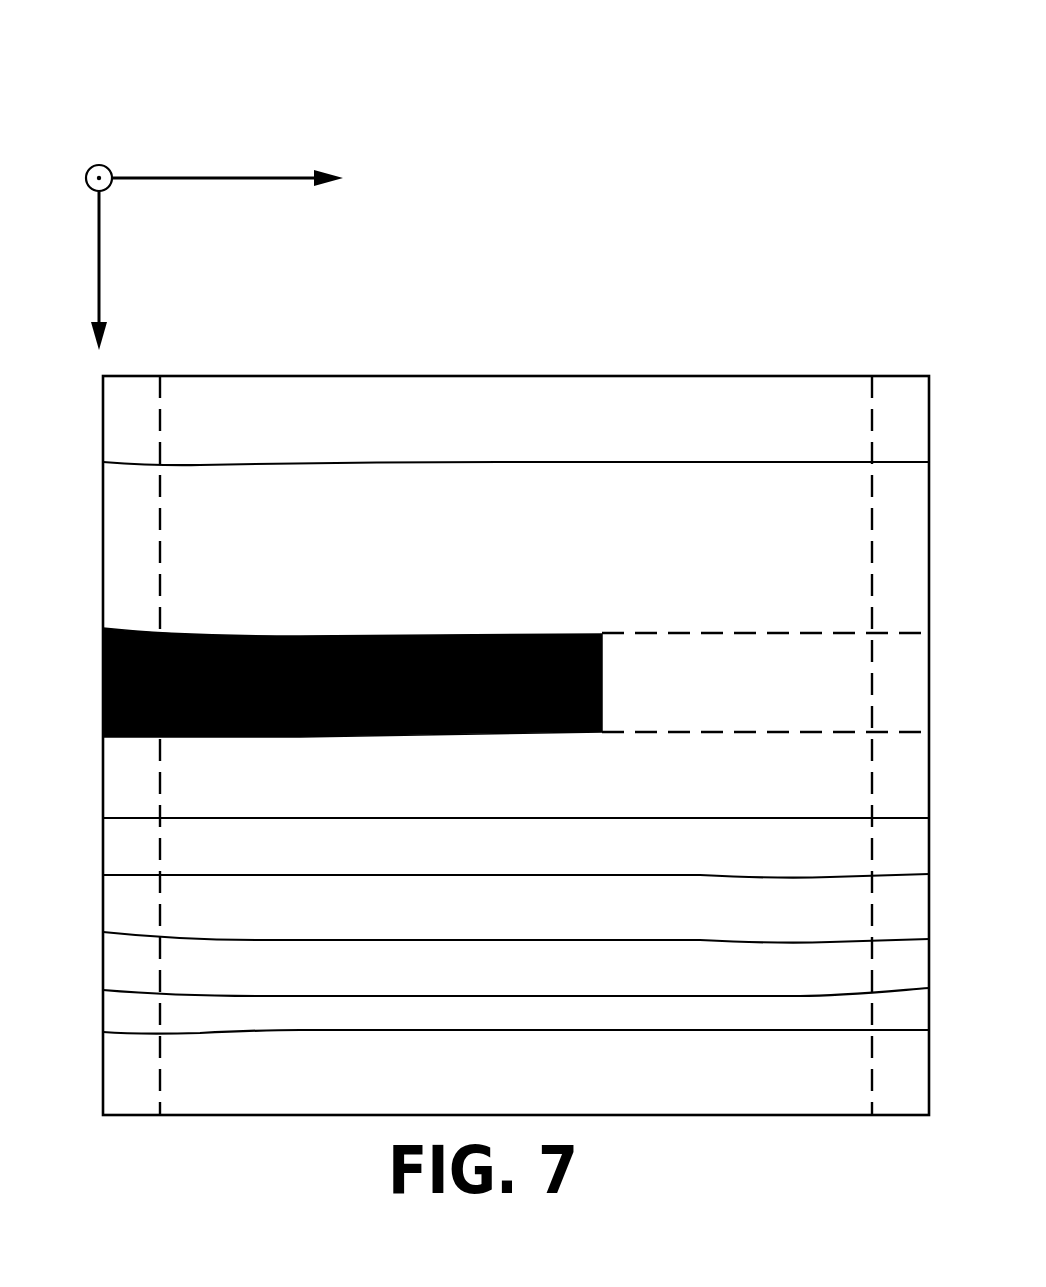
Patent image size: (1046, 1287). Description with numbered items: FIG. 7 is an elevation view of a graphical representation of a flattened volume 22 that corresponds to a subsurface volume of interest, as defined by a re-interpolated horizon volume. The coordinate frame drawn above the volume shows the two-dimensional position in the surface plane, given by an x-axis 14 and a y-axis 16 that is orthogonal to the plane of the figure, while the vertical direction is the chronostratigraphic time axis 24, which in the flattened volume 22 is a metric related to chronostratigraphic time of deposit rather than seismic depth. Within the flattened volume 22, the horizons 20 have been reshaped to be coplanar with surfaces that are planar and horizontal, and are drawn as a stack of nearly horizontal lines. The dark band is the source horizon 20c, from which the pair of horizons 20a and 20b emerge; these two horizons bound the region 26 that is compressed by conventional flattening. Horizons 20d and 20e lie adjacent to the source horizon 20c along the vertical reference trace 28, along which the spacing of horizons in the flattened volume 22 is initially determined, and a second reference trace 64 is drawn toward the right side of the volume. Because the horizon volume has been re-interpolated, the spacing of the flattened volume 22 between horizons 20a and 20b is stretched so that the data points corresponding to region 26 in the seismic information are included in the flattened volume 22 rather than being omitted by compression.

The x-axis 14 is at (200, 177).
The y-axis 16 is at (100, 160).
The horizons 20 is at (728, 1032).
The horizon 20a is at (770, 633).
The horizon 20b is at (785, 735).
The source horizon 20c is at (333, 635).
The horizon 20d is at (255, 461).
The horizon 20e is at (437, 817).
The flattened volume 22 is at (545, 253).
The chronostratigraphic time axis 24 is at (100, 248).
The region 26 is at (692, 683).
The vertical reference trace 28 is at (160, 530).
The reference trace 64 is at (870, 553).